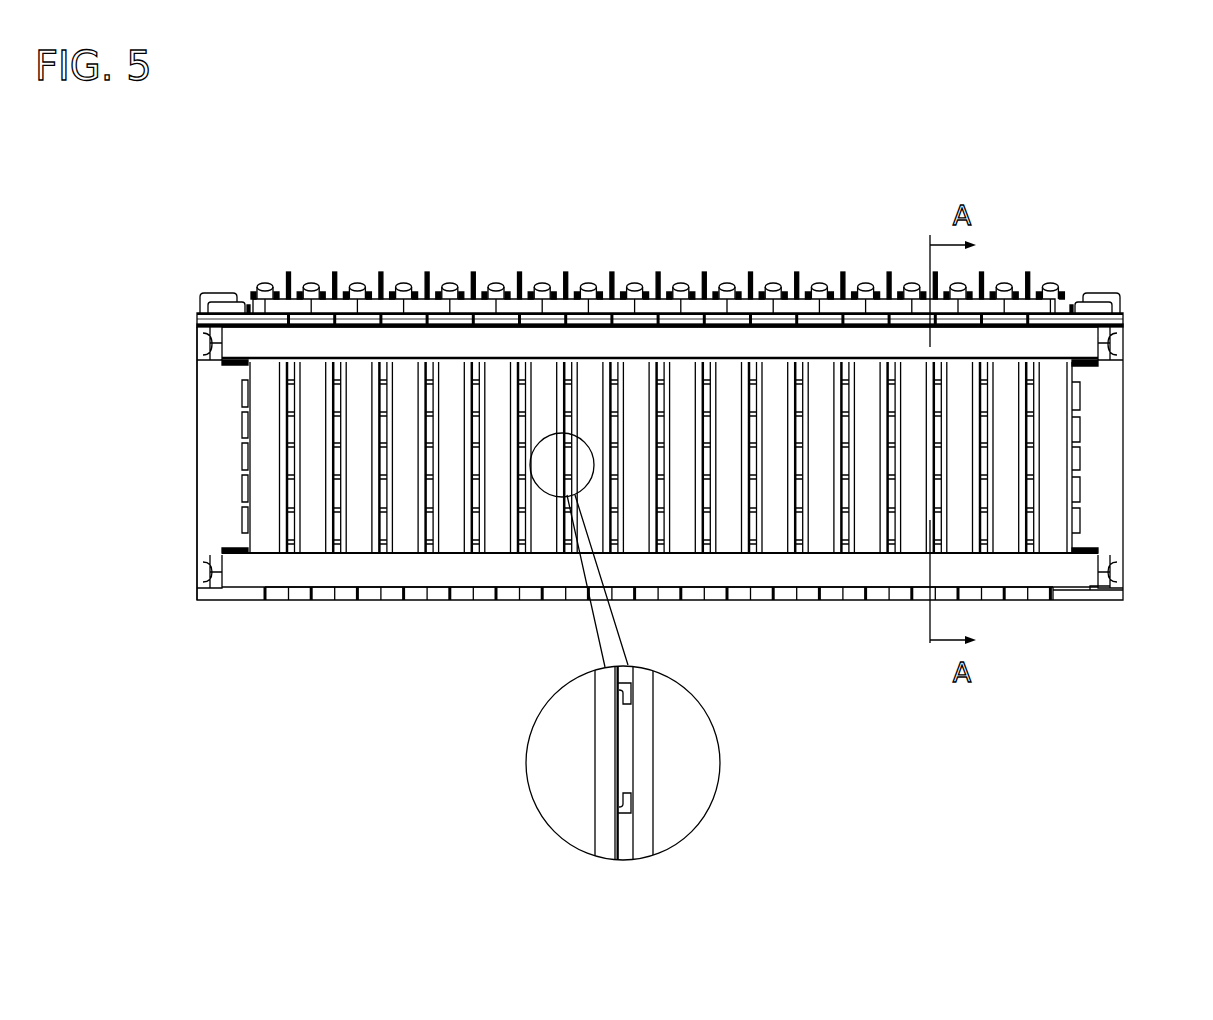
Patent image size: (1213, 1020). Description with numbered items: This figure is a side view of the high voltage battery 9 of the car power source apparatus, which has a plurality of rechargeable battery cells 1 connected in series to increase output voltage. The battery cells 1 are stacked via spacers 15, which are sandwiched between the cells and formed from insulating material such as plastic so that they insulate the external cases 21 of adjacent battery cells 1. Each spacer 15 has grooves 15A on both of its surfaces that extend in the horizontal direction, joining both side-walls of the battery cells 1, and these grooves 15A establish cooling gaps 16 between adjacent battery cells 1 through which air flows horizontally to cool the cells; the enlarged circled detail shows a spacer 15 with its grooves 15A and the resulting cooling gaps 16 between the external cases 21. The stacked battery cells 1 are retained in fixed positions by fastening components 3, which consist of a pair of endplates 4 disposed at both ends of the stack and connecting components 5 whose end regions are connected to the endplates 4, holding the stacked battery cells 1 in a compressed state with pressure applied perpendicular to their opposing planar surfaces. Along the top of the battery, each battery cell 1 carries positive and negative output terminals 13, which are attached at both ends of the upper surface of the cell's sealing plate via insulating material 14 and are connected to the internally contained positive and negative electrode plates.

The high voltage battery 9 is at (652, 222).
The battery cell 1 is at (358, 537).
The fastening component 3 is at (138, 369).
The endplate 4 is at (218, 442).
The connecting component 5 is at (316, 344).
The output terminal 13 is at (264, 283).
The insulating material 14 is at (289, 272).
The spacer 15 is at (1040, 483).
The groove 15A is at (620, 684).
The cooling gap 16 is at (337, 492).
The external case 21 is at (562, 795).